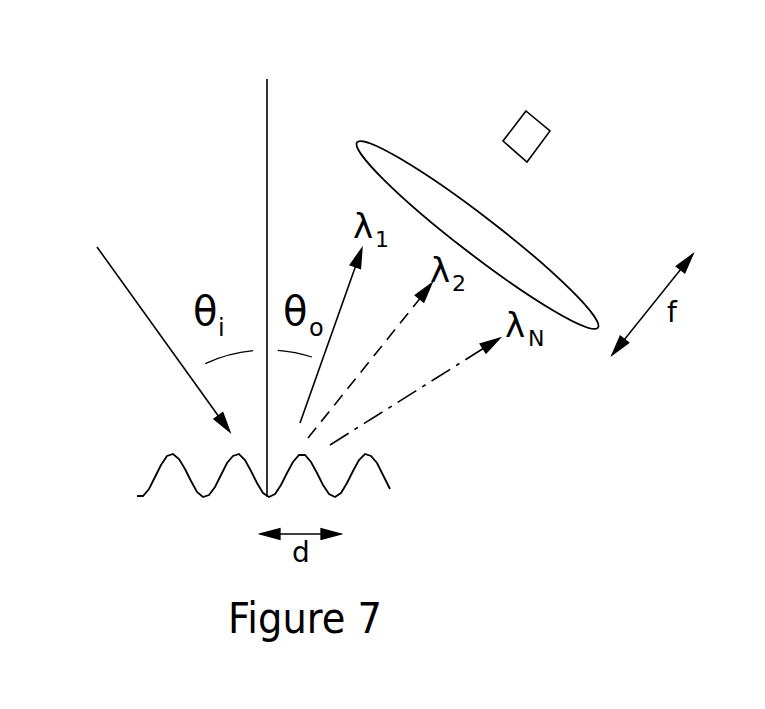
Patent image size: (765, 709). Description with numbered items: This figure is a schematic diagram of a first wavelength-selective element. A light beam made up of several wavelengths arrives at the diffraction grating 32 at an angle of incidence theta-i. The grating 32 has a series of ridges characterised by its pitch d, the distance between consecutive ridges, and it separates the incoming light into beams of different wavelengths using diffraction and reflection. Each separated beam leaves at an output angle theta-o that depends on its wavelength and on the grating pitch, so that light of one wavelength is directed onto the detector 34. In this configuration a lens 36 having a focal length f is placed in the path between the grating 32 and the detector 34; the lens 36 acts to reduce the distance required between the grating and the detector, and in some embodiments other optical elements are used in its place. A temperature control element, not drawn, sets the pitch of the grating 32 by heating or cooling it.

The diffraction grating 32 is at (133, 468).
The detector 34 is at (510, 120).
The lens 36 is at (555, 255).